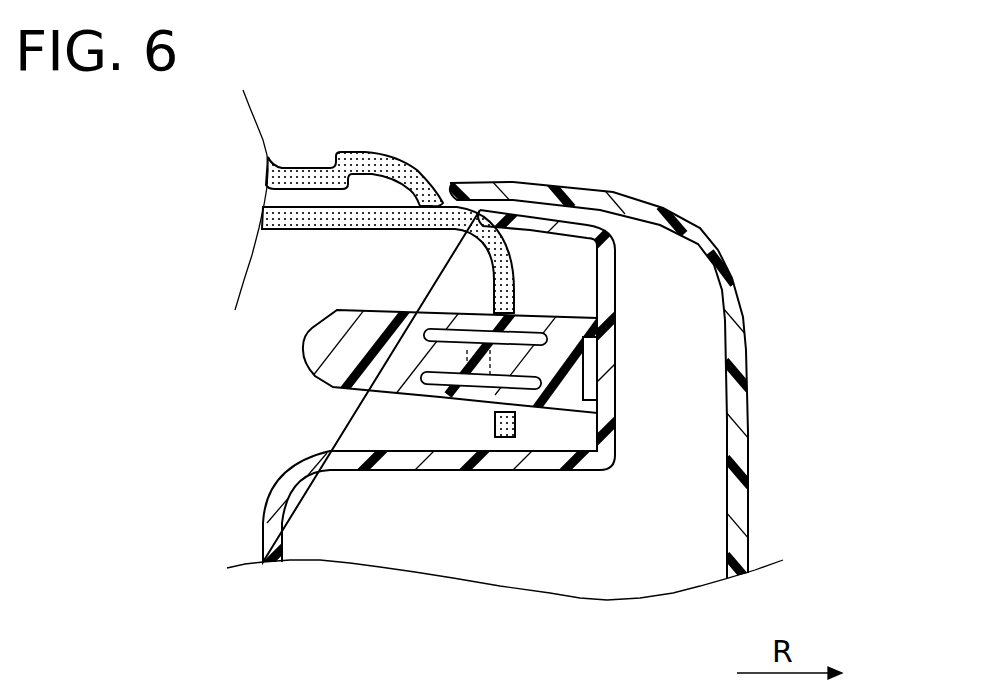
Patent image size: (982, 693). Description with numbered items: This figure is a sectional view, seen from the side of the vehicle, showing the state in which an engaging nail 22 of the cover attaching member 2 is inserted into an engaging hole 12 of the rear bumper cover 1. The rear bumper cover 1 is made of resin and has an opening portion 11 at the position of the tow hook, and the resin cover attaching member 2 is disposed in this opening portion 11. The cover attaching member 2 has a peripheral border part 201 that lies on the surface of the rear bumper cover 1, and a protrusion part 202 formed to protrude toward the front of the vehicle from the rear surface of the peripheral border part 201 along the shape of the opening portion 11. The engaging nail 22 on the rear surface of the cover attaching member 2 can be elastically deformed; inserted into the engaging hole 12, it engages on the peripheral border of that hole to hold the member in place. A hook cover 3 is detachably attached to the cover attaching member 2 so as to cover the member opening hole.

The rear bumper cover 1 is at (565, 380).
The cover attaching member 2 is at (511, 399).
The hook cover 3 is at (752, 355).
The opening portion 11 is at (503, 438).
The engaging hole 12 is at (507, 400).
The engaging nail 22 is at (453, 382).
The peripheral border part 201 is at (610, 297).
The protrusion part 202 is at (352, 460).